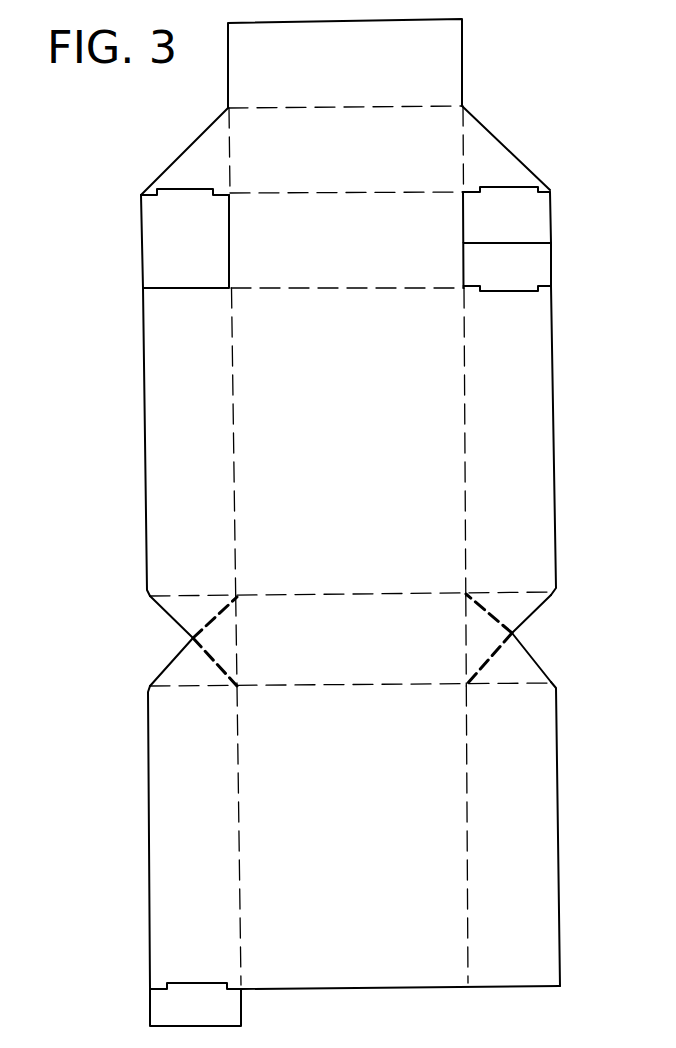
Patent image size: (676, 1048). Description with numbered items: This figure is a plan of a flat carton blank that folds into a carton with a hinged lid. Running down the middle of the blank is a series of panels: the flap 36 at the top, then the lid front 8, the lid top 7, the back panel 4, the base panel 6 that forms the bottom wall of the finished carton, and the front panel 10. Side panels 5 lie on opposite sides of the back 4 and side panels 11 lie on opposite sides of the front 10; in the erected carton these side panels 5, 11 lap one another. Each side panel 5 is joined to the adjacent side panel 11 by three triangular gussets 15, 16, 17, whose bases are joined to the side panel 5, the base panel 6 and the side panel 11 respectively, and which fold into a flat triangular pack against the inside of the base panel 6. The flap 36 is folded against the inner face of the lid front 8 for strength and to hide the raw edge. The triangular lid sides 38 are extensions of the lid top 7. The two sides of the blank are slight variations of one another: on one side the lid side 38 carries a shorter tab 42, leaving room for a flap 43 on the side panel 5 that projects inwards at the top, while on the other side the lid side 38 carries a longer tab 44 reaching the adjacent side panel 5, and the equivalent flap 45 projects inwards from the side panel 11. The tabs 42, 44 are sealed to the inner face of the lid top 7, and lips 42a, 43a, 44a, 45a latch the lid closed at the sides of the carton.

The back panel 4 is at (340, 455).
The side panel 5 is at (182, 458).
The base panel 6 is at (347, 658).
The lid top panel 7 is at (335, 256).
The lid front panel 8 is at (331, 168).
The front panel 10 is at (355, 850).
The side panel 11 is at (181, 850).
The triangular gusset 15 is at (200, 612).
The triangular gusset 16 is at (220, 647).
The triangular gusset 17 is at (203, 670).
The flap 36 is at (326, 76).
The triangular lid side 38 is at (200, 152).
The shorter tab 42 is at (530, 220).
The lip 42a is at (505, 187).
The flap 43 is at (525, 267).
The lip 43a is at (516, 293).
The longer tab 44 is at (171, 250).
The lip 44a is at (180, 187).
The flap 45 is at (222, 1013).
The lip 45a is at (205, 983).